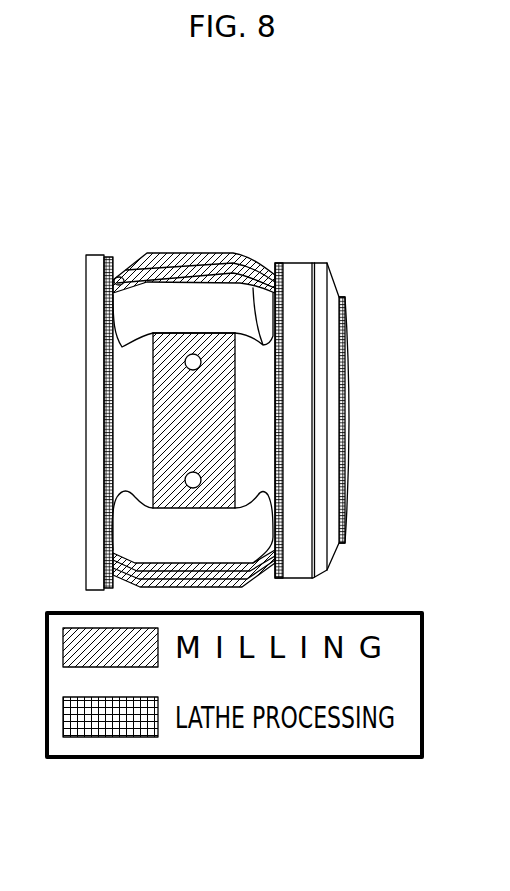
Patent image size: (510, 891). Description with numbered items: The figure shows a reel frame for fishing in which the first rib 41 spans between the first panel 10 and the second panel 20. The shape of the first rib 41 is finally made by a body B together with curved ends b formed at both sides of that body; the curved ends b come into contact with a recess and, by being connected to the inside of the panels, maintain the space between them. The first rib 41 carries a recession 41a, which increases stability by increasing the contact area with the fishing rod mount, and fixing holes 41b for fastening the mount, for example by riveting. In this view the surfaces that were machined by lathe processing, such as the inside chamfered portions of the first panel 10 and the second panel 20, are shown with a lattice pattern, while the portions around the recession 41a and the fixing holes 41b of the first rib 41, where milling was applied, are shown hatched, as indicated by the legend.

The first panel 10 is at (324, 250).
The second panel 20 is at (90, 242).
The first rib 41 is at (310, 147).
The recession 41a is at (177, 367).
The fixing holes 41b is at (196, 356).
The body B is at (215, 333).
The curved ends b is at (122, 345).